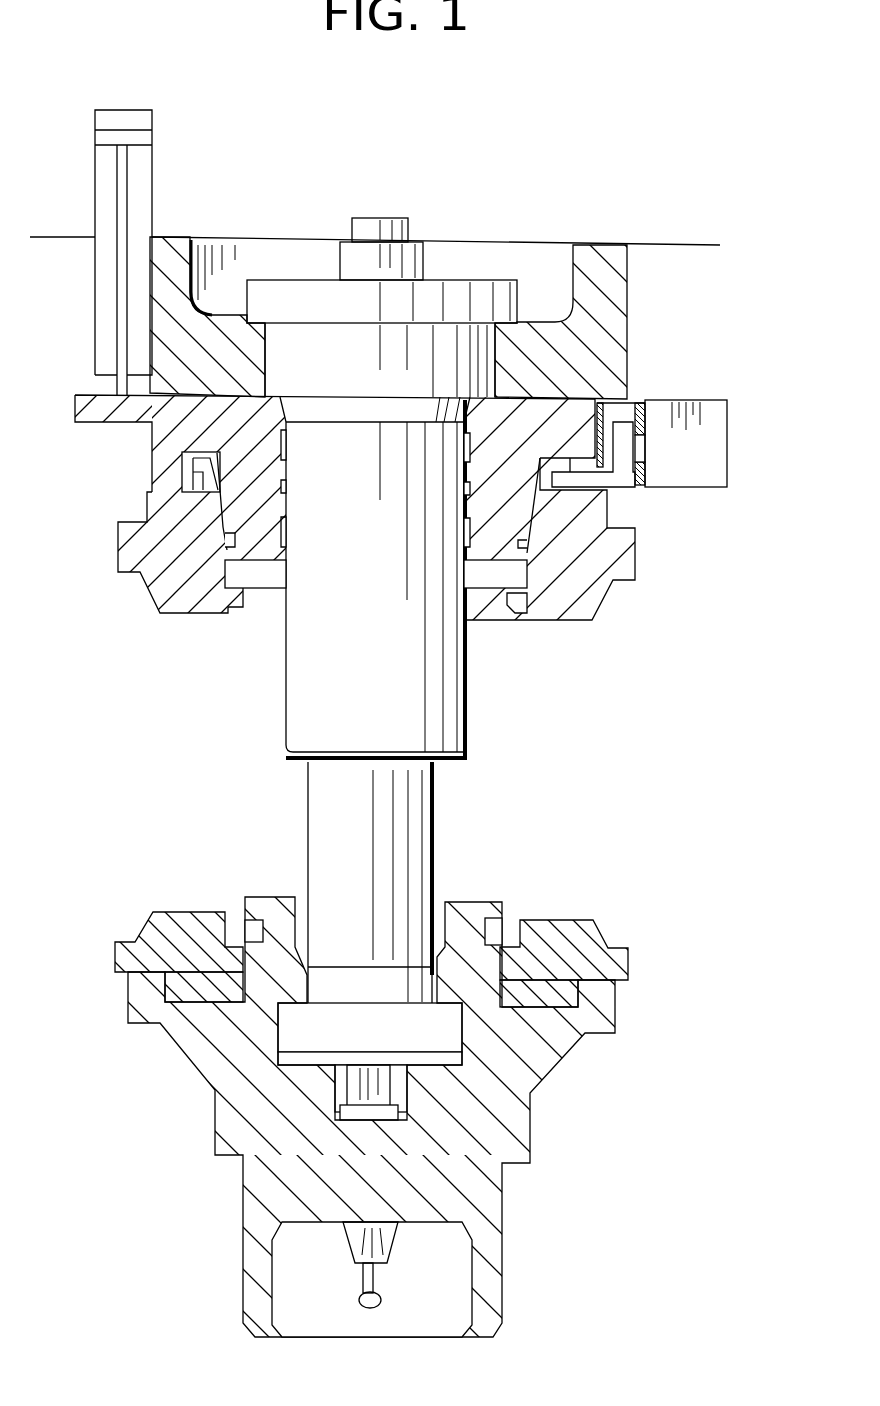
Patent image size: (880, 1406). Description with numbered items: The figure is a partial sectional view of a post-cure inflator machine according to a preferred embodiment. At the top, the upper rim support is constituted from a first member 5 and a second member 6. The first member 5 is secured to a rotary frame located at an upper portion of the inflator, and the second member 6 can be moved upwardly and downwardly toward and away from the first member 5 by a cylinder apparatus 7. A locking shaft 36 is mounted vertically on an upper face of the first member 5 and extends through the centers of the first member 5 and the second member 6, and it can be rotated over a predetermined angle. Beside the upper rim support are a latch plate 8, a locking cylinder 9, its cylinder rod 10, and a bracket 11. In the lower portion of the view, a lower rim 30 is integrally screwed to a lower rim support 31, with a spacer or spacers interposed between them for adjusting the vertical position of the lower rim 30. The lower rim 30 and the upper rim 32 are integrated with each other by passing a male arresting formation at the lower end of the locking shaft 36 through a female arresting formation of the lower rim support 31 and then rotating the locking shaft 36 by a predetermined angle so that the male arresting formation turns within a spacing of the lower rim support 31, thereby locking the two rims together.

The first member 5 is at (602, 260).
The second member 6 is at (590, 400).
The cylinder apparatus 7 is at (152, 147).
The latch plate 8 is at (622, 488).
The locking cylinder 9 is at (727, 403).
The cylinder rod 10 is at (645, 447).
The bracket 11 is at (645, 402).
The lower rim 30 is at (583, 930).
The lower rim support 31 is at (533, 1065).
The upper rim 32 is at (620, 553).
The locking shaft 36 is at (387, 609).